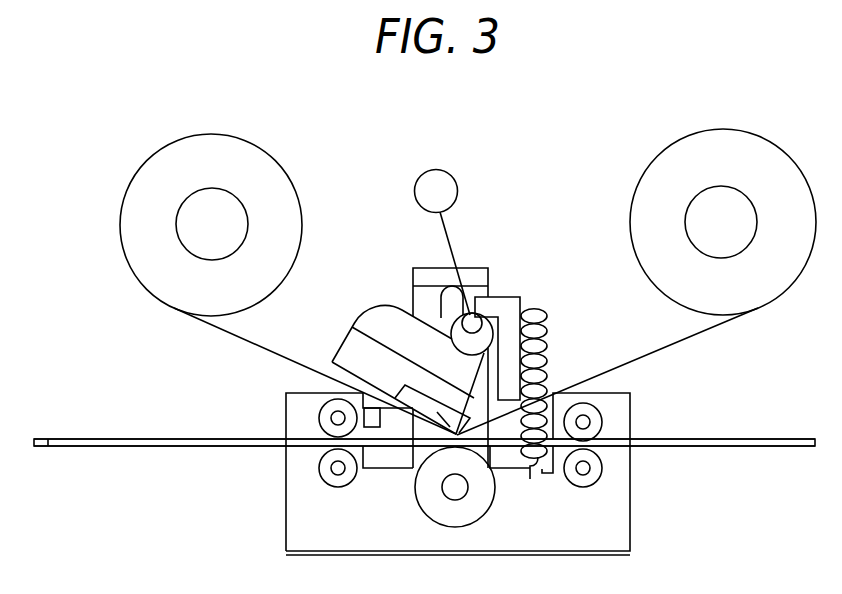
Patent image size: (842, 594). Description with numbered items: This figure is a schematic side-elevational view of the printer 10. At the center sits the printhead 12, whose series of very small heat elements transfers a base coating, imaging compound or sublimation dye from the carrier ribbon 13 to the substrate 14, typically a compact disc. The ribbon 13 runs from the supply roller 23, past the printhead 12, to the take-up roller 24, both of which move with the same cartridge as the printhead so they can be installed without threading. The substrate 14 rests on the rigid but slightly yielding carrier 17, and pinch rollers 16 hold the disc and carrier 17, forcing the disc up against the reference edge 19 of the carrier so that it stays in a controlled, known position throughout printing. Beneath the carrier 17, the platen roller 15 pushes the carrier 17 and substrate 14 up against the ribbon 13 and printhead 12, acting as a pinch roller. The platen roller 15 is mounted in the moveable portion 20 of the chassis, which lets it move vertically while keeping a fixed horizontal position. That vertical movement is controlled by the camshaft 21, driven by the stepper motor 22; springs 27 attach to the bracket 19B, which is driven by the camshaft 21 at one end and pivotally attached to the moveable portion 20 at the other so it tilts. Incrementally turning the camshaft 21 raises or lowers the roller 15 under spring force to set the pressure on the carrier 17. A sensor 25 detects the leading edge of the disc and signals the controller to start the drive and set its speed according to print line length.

The printer 10 is at (490, 155).
The printhead 12 is at (527, 340).
The carrier ribbon 13 is at (229, 342).
The substrate 14 is at (205, 439).
The platen roller 15 is at (437, 507).
The pinch rollers 16 is at (332, 408).
The carrier 17 is at (55, 451).
The reference edge 19 is at (56, 437).
The bracket 19B is at (499, 300).
The moveable portion of the chassis 20 is at (610, 530).
The camshaft 21 is at (440, 408).
The stepper motor 22 is at (432, 171).
The supply roller 23 is at (133, 247).
The take-up roller 24 is at (668, 178).
The sensor 25 is at (370, 406).
The springs 27 is at (547, 357).